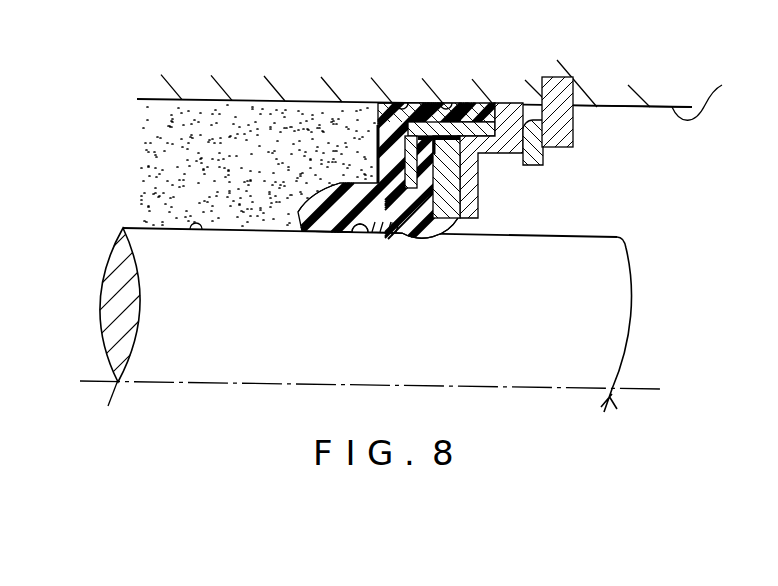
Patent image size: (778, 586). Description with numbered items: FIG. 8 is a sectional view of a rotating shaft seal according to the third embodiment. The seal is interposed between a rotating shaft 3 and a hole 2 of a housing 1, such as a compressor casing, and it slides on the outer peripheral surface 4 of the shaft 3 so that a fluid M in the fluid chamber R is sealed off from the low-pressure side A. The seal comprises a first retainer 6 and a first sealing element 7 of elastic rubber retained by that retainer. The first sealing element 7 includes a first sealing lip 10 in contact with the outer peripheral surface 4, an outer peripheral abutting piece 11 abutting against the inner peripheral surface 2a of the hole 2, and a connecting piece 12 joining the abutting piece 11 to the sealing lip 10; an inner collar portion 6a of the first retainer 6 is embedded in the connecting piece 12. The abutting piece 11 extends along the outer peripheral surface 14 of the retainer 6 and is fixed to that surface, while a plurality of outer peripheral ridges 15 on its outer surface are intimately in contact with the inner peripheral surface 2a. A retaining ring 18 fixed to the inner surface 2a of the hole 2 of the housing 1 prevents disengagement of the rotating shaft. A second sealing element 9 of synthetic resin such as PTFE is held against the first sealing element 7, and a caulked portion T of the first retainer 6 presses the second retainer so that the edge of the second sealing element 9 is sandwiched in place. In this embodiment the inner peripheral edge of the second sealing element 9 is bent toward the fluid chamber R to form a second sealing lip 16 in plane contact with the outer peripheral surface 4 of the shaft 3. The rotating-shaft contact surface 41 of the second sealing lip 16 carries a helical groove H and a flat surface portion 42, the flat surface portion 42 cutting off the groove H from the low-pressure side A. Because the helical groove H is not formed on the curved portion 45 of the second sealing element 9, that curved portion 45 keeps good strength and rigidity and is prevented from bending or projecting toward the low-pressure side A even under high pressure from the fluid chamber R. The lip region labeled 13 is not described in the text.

The housing 1 is at (233, 69).
The hole 2 is at (641, 116).
The inner peripheral surface 2a is at (709, 90).
The rotating shaft 3 is at (556, 226).
The outer peripheral surface 4 is at (190, 235).
The first retainer 6 is at (520, 112).
The inner collar portion 6a is at (405, 158).
The first sealing element 7 is at (373, 117).
The second sealing element 9 is at (463, 236).
The first sealing lip 10 is at (329, 240).
The outer peripheral abutting piece 11 is at (457, 107).
The connecting piece 12 is at (378, 137).
The sealing lip 13 is at (300, 226).
The outer peripheral surface 14 is at (487, 107).
The outer peripheral ridges 15 is at (427, 105).
The second sealing lip 16 is at (352, 236).
The retaining ring 18 is at (558, 82).
The rotating-shaft contact surface 41 is at (382, 244).
The flat surface portion 42 is at (417, 236).
The curved portion 45 is at (437, 219).
The low-pressure side A is at (645, 180).
The helical groove H is at (392, 236).
The fluid M is at (138, 162).
The fluid chamber R is at (225, 171).
The caulked portion T is at (540, 174).